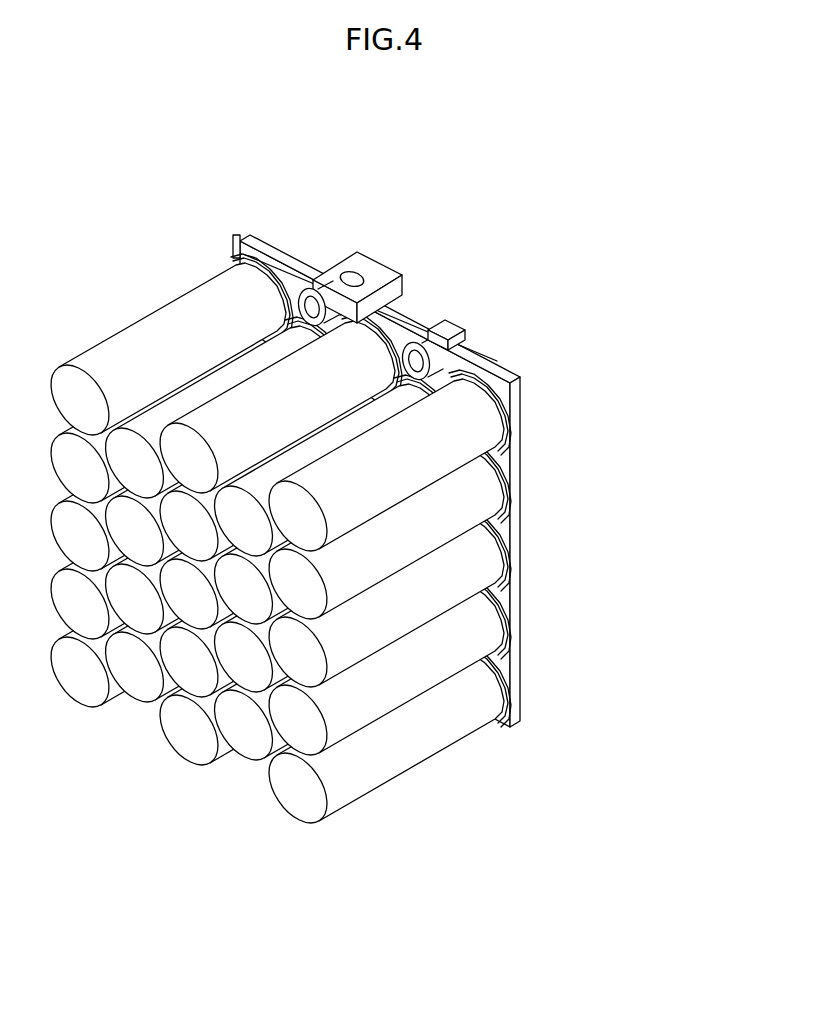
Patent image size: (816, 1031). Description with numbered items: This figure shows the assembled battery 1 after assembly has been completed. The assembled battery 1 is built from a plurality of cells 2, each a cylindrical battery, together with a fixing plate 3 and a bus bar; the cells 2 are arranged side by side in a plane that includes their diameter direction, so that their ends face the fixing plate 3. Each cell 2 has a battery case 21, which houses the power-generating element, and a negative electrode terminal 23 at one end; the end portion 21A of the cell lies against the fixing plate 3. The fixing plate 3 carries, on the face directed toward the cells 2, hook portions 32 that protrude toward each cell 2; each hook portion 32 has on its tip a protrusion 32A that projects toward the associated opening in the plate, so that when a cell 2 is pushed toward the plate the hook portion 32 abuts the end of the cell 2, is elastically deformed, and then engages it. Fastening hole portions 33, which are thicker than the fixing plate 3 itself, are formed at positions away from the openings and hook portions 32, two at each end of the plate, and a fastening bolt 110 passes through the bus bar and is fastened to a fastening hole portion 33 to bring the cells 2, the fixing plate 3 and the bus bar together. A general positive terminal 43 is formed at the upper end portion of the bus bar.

The assembled battery 1 is at (322, 572).
The cell 2 is at (276, 577).
The fixing plate 3 is at (508, 588).
The battery case 21 is at (384, 775).
The rear end portion of battery cell 21A is at (487, 695).
The negative electrode terminal 23 is at (297, 783).
The hook portion 32 is at (300, 258).
The protrusion 32A is at (235, 254).
The fastening hole portion 33 is at (423, 330).
The general positive terminal 43 is at (360, 262).
The fastening bolt 110 is at (462, 328).